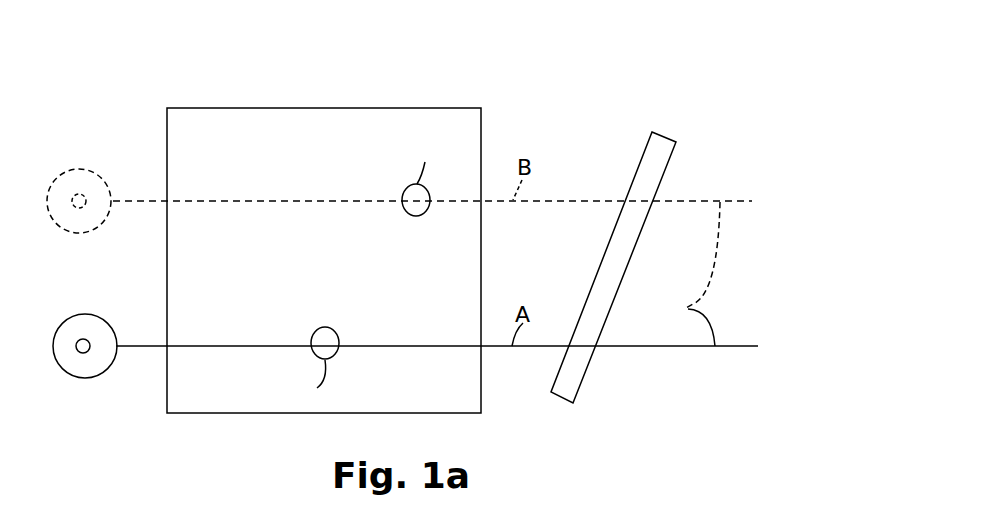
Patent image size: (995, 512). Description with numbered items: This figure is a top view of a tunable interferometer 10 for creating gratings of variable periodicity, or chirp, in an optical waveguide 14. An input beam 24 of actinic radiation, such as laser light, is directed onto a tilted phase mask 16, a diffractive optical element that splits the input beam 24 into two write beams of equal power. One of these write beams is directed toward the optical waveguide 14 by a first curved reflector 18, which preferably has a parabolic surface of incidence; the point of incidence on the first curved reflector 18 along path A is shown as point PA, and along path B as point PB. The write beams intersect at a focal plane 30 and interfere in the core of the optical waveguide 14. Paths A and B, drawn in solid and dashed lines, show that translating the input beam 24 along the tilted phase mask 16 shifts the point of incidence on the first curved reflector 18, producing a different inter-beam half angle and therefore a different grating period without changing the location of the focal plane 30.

The tunable interferometer 10 is at (554, 50).
The optical waveguide 14 is at (80, 170).
The tilted phase mask 16 is at (662, 135).
The first curved reflector 18 is at (327, 282).
The input beam 24 is at (688, 274).
The focal plane 30 is at (116, 212).